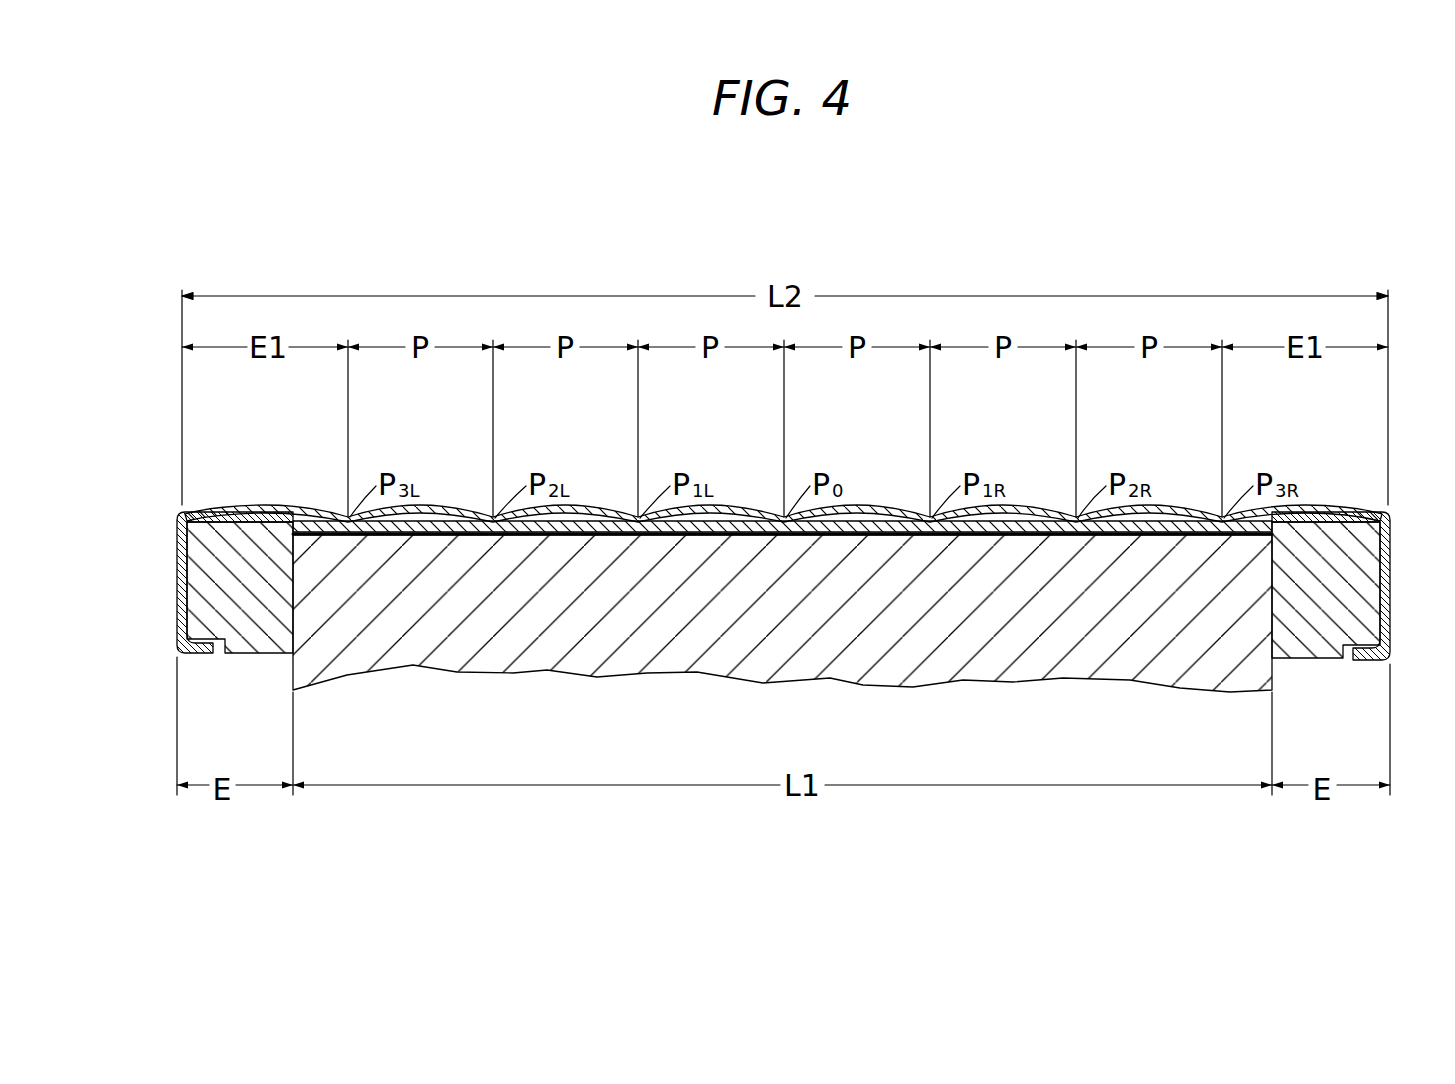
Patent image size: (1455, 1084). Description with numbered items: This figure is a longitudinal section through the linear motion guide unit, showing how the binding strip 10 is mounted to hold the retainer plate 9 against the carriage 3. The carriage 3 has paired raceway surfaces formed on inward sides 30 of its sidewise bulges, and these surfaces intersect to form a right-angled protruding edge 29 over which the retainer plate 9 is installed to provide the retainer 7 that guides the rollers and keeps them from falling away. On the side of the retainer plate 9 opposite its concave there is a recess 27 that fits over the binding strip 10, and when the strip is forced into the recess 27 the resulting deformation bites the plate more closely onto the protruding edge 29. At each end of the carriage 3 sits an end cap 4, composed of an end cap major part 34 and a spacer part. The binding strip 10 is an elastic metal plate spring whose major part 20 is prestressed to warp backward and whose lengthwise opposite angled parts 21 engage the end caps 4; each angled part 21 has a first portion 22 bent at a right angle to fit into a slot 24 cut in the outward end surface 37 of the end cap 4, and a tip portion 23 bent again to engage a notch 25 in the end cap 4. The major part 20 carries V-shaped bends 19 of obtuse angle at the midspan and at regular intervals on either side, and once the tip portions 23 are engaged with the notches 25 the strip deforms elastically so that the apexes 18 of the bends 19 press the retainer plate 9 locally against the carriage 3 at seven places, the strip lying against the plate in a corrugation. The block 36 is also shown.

The carriage 3 is at (945, 625).
The end cap 4 is at (180, 650).
The retainer 7 is at (1316, 515).
The retainer plate 9 is at (851, 532).
The binding strip 10 is at (745, 510).
The apex 18 is at (1222, 522).
The bend 19 is at (929, 517).
The major part 20 is at (1010, 510).
The angled part 21 is at (158, 596).
The first portion 22 is at (1387, 594).
The tip portion 23 is at (1370, 650).
The slot 24 is at (1395, 563).
The notch 25 is at (1350, 658).
The recess 27 is at (460, 527).
The protruding edge 29 is at (657, 540).
The inward side 30 is at (577, 532).
The end cap major part 34 is at (1318, 640).
The spacer block 36 is at (1278, 608).
The outward end surface 37 is at (1391, 550).